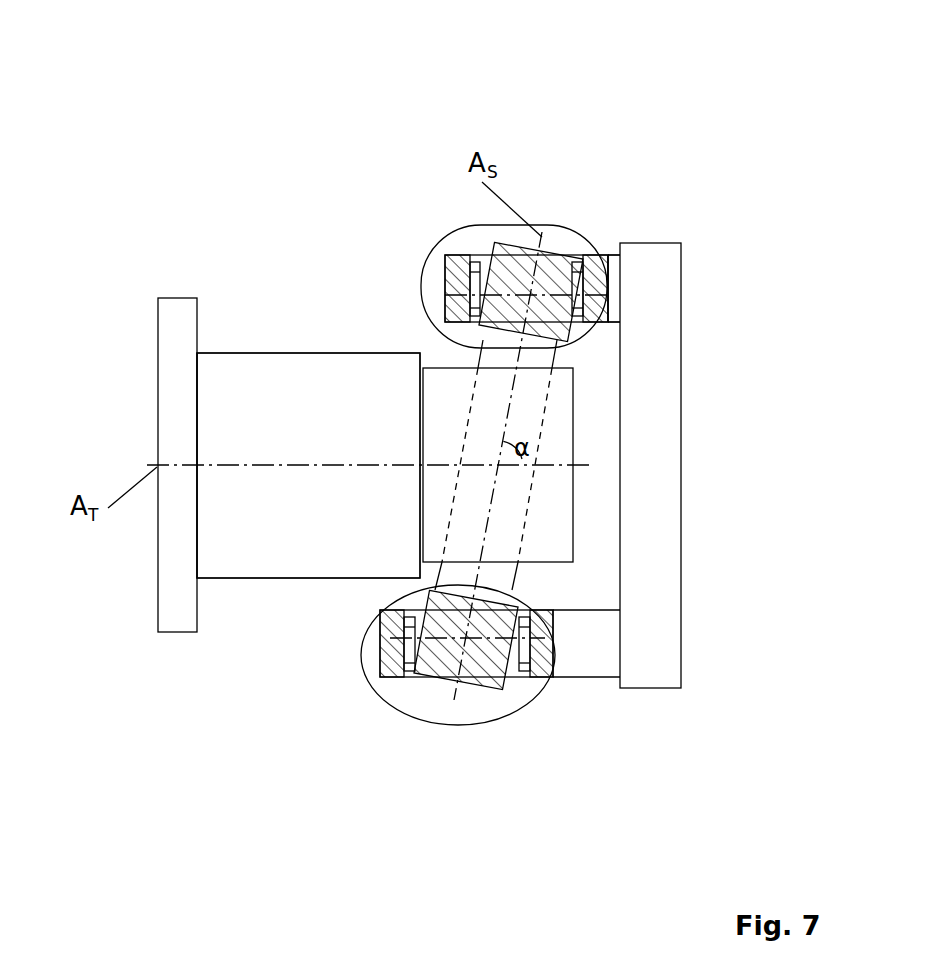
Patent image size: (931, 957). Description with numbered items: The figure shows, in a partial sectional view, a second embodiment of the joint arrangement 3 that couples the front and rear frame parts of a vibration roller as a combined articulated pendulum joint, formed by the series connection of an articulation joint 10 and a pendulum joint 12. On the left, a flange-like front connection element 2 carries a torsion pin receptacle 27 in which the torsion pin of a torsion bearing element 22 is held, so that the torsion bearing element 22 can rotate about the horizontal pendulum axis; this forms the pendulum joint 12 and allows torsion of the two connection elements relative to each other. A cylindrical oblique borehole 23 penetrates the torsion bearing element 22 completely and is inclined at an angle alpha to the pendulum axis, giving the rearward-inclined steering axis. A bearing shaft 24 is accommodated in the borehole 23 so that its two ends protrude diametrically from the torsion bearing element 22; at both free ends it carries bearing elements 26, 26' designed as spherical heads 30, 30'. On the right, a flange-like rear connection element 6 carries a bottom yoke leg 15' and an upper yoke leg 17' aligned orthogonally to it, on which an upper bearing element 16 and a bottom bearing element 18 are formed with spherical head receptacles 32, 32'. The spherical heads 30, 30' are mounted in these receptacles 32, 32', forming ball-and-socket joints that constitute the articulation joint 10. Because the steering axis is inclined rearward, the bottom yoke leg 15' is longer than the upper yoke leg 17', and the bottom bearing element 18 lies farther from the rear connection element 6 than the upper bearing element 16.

The front connection element 2 is at (170, 382).
The joint arrangement 3 is at (340, 73).
The rear connection element 6 is at (660, 450).
The articulation joint 10 is at (541, 200).
The pendulum joint 12 is at (229, 132).
The bottom yoke leg 15' is at (613, 705).
The upper bearing element 16 is at (453, 275).
The upper yoke leg 17' is at (707, 308).
The bottom bearing element 18 is at (387, 662).
The torsion bearing element 22 is at (445, 428).
The cylindrical oblique borehole 23 is at (523, 545).
The bearing shaft 24 is at (492, 355).
The bearing element 26 is at (497, 693).
The bearing element 26' is at (546, 245).
The torsion pin receptacle 27 is at (252, 380).
The spherical head 30 is at (383, 647).
The spherical head 30' is at (678, 258).
The spherical head receptacle 32 is at (350, 630).
The spherical head receptacle 32' is at (579, 207).